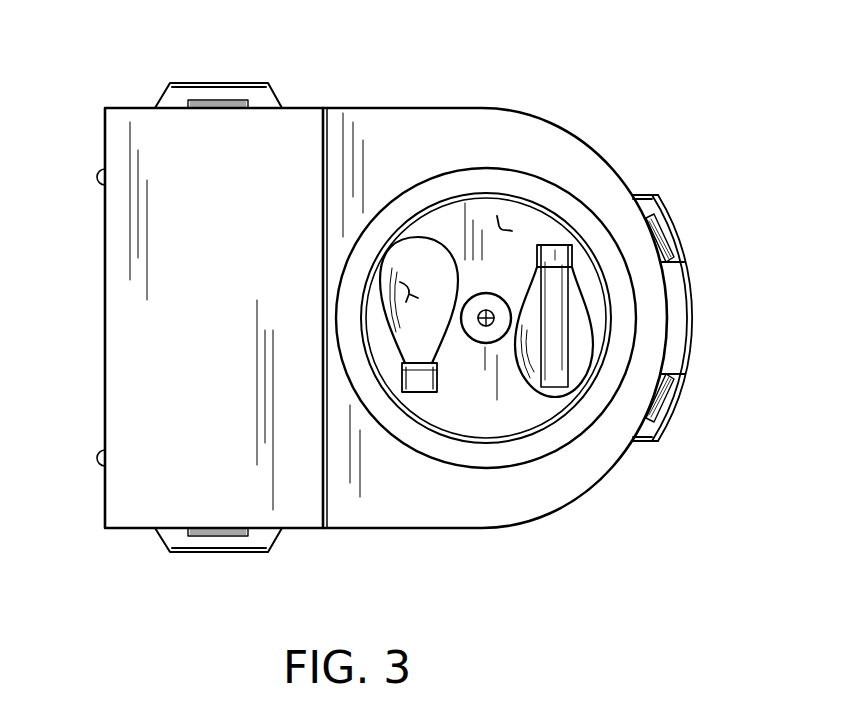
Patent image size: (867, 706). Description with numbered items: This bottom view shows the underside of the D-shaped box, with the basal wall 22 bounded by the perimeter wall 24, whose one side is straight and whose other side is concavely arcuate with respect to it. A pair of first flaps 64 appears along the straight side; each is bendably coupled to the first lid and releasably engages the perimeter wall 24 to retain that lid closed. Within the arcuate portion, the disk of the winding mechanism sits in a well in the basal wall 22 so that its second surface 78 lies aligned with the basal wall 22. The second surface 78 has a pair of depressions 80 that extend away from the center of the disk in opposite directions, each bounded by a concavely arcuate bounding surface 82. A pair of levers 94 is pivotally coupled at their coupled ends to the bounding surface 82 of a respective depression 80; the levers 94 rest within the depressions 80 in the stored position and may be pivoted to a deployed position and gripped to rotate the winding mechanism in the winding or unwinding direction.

The basal wall 22 is at (375, 122).
The perimeter wall 24 is at (530, 433).
The first flaps 64 is at (208, 88).
The second surface 78 is at (497, 220).
The depressions 80 is at (417, 238).
The bounding surface 82 is at (410, 293).
The levers 94 is at (554, 258).